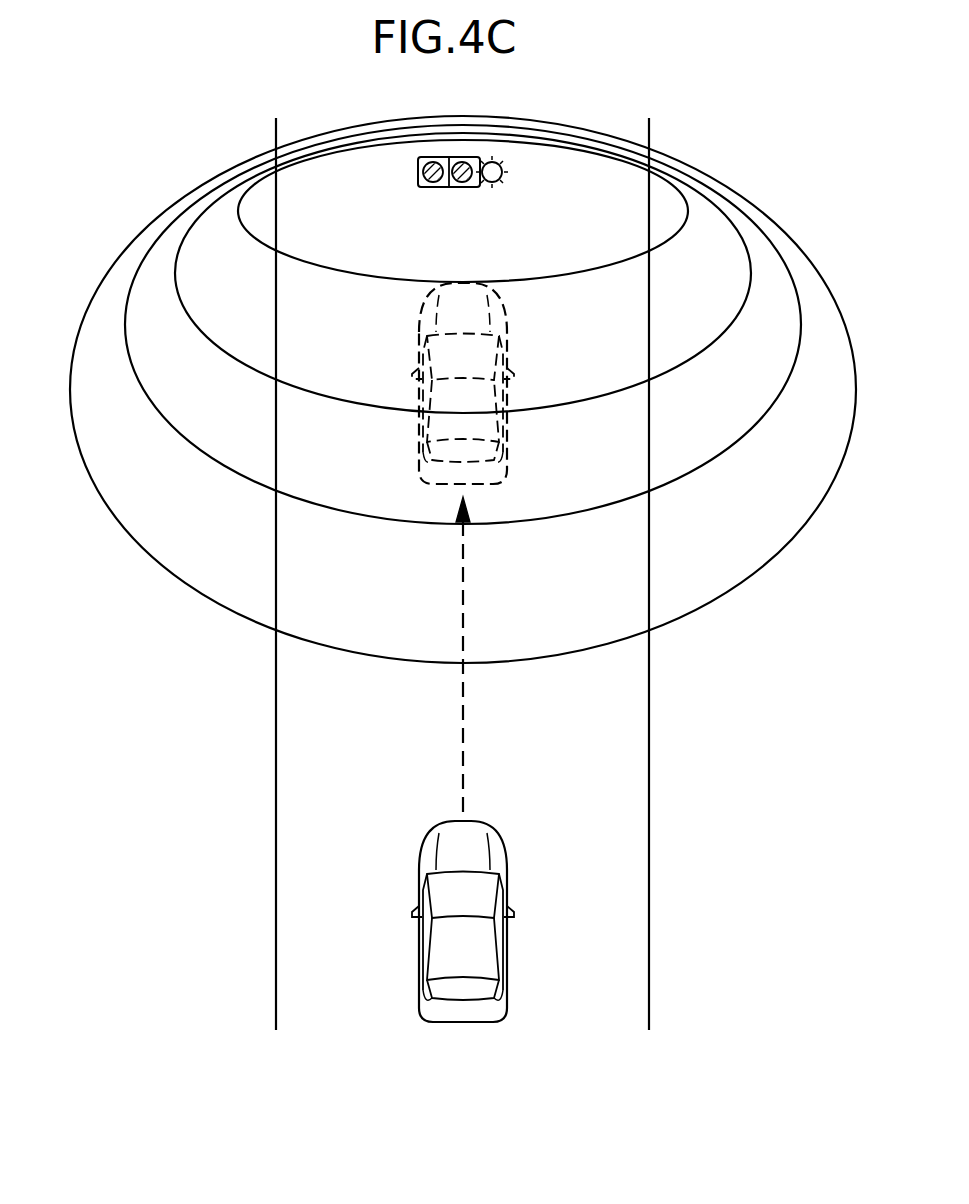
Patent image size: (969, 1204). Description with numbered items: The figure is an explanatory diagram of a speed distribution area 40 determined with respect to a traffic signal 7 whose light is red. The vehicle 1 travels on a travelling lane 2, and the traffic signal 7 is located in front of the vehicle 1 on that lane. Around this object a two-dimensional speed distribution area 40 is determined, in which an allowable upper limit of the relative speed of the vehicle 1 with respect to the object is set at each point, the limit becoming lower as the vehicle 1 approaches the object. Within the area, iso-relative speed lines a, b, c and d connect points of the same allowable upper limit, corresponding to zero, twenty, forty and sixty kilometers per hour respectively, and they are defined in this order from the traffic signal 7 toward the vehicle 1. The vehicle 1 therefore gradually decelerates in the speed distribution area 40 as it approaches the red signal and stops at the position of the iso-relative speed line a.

The vehicle 1 is at (505, 443).
The travelling lane 2 is at (620, 730).
The traffic signal 7 is at (461, 190).
The speed distribution area 40 is at (452, 389).
The iso-relative speed line a is at (260, 243).
The iso-relative speed line b is at (228, 360).
The iso-relative speed line c is at (188, 443).
The iso-relative speed line d is at (137, 548).